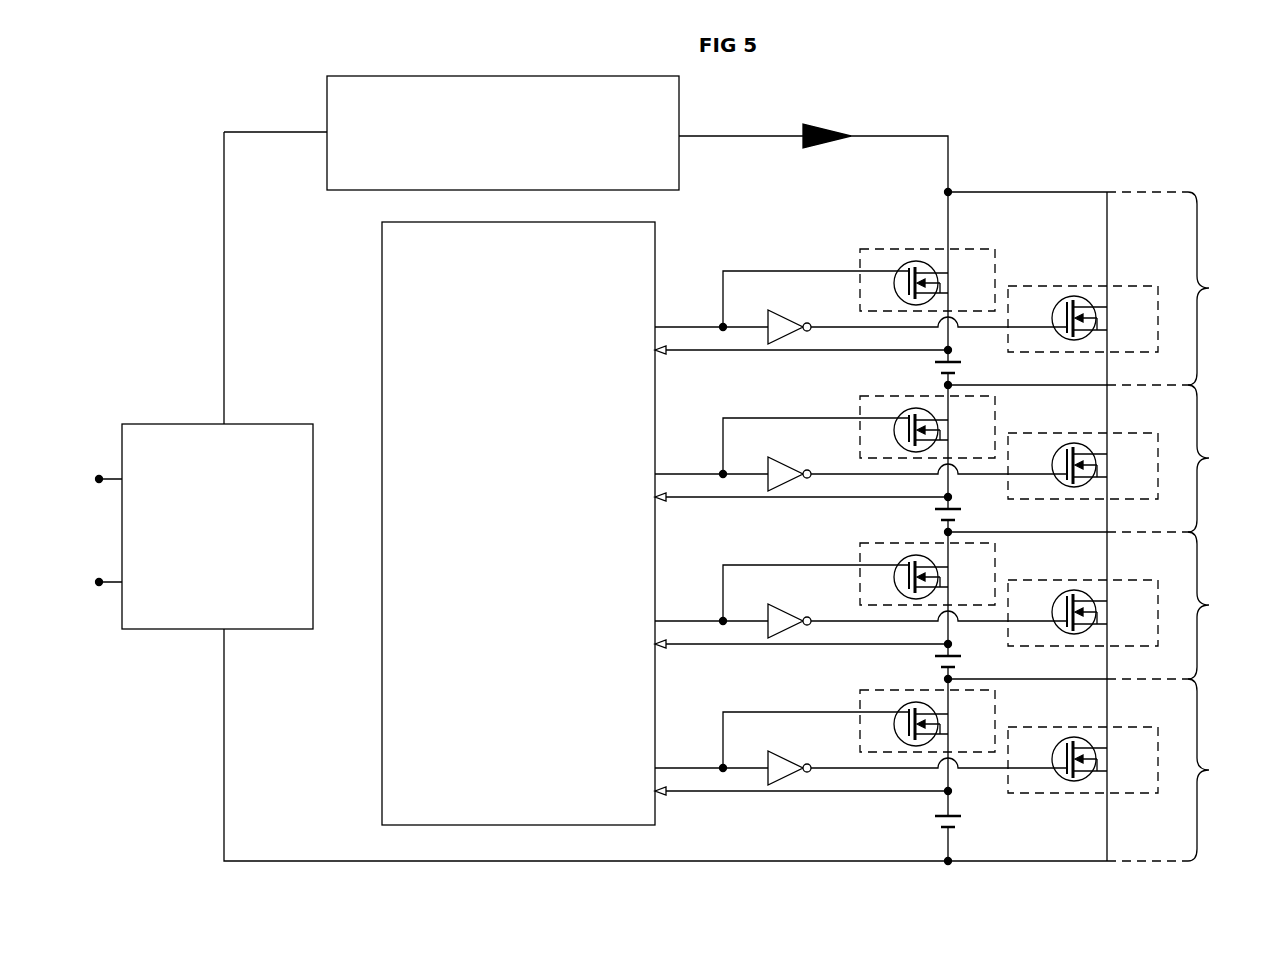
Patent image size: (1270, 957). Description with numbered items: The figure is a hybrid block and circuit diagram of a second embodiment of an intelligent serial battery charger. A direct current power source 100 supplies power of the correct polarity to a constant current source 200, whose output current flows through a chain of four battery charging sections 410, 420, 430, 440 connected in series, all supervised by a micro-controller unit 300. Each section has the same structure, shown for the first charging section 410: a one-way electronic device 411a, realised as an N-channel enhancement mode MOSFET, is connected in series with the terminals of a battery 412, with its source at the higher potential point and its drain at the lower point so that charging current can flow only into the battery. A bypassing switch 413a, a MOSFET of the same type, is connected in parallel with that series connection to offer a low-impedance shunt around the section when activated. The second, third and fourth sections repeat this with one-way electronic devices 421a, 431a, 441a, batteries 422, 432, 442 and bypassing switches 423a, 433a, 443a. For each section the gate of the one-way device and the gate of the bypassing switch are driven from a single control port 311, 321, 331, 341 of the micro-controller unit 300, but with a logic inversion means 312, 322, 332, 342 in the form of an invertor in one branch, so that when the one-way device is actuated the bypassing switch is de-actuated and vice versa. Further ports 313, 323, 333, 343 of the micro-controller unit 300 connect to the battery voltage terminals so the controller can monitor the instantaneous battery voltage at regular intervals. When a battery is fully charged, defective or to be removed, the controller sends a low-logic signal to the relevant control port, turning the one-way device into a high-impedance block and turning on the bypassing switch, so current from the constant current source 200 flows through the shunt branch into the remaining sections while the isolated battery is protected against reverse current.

The direct current power source 100 is at (602, 496).
The constant current source 200 is at (586, 134).
The micro-controller unit 300 is at (518, 523).
The control port 311 is at (695, 322).
The logic inversion means 312 is at (894, 307).
The A/D1 port of MCU 313 is at (785, 359).
The control port 321 is at (695, 469).
The inverter G2 322 is at (894, 454).
The A/D2 port of MCU 323 is at (785, 506).
The control port 331 is at (695, 616).
The inverter G3 332 is at (894, 601).
The A/D3 port of MCU 333 is at (785, 653).
The control port 341 is at (695, 763).
The inverter G4 342 is at (894, 748).
The A/D4 port of MCU 343 is at (785, 800).
The first charging section 410 is at (1098, 290).
The one-way electronic device 411a is at (908, 262).
The battery 412 is at (953, 311).
The bypassing switch 413a is at (1083, 319).
The second charging section 420 is at (1098, 460).
The one-way electronic device 421a is at (908, 411).
The battery 422 is at (953, 458).
The bypassing switch 423a is at (1083, 466).
The third charging section 430 is at (1098, 607).
The one-way electronic device 431a is at (908, 558).
The battery 432 is at (953, 605).
The bypassing switch 433a is at (1083, 613).
The fourth charging section 440 is at (1098, 772).
The one-way electronic device 441a is at (908, 705).
The battery 442 is at (953, 770).
The bypassing switch 443a is at (1083, 760).